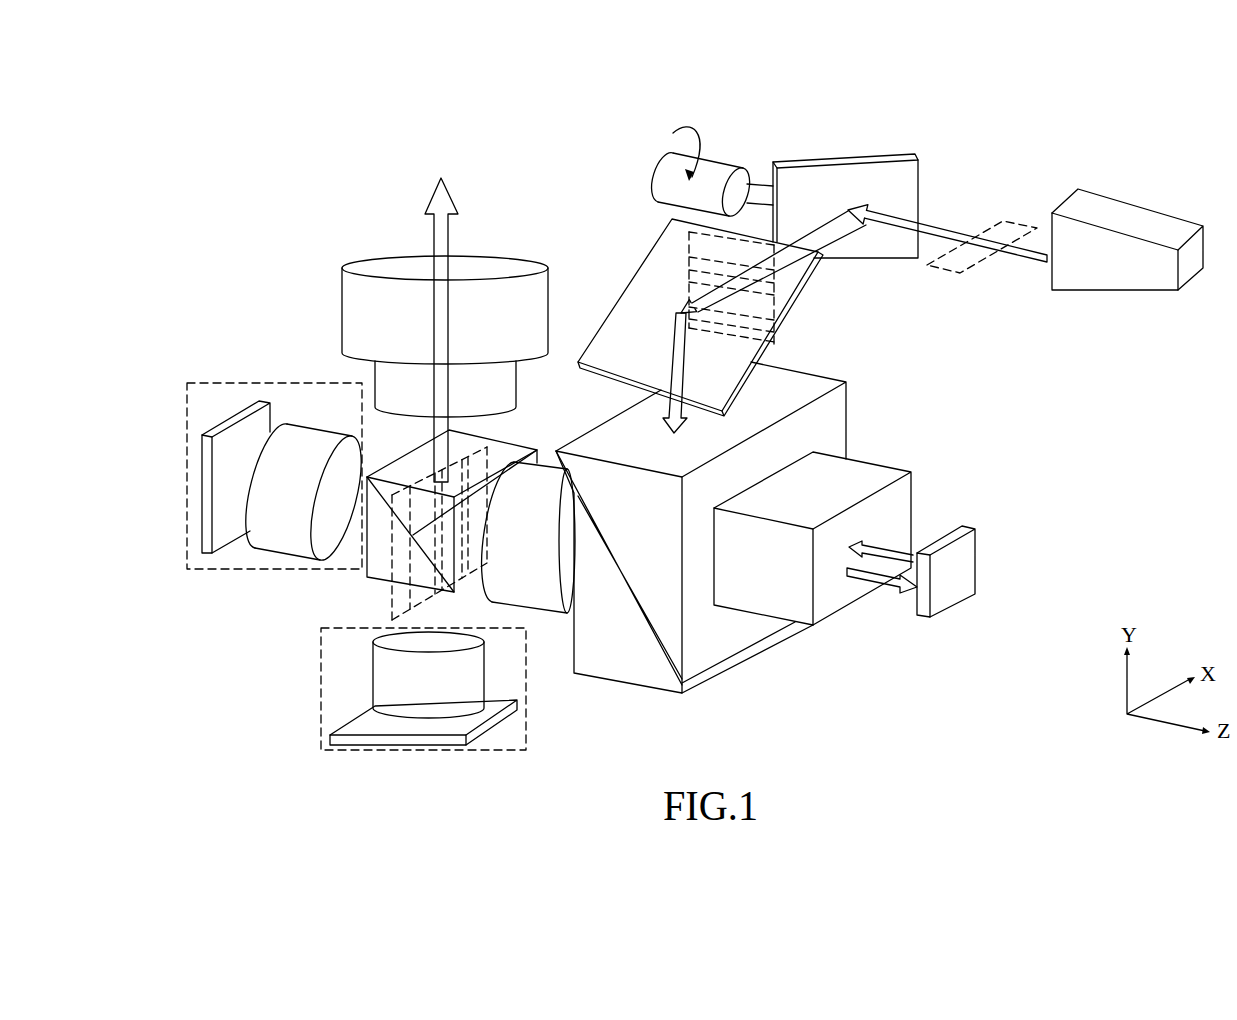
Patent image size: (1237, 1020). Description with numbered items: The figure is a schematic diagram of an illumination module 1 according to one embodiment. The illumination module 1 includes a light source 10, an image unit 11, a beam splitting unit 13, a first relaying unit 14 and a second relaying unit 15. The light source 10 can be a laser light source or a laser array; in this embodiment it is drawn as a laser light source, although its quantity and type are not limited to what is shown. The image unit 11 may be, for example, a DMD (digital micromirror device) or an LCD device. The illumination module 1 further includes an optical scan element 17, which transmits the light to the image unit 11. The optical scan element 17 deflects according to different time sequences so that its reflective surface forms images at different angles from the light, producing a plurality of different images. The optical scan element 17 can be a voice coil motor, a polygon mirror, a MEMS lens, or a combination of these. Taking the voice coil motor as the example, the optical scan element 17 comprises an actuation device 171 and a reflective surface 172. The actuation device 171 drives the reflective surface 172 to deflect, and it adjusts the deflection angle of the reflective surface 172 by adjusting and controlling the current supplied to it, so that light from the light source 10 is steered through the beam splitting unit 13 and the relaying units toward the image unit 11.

The illumination module 1 is at (282, 173).
The light source 10 is at (1133, 212).
The image unit 11 is at (958, 592).
The beam splitting unit 13 is at (508, 453).
The first relaying unit 14 is at (265, 383).
The second relaying unit 15 is at (321, 692).
The optical scan element 17 is at (873, 98).
The actuation device 171 is at (723, 172).
The reflective surface 172 is at (840, 158).